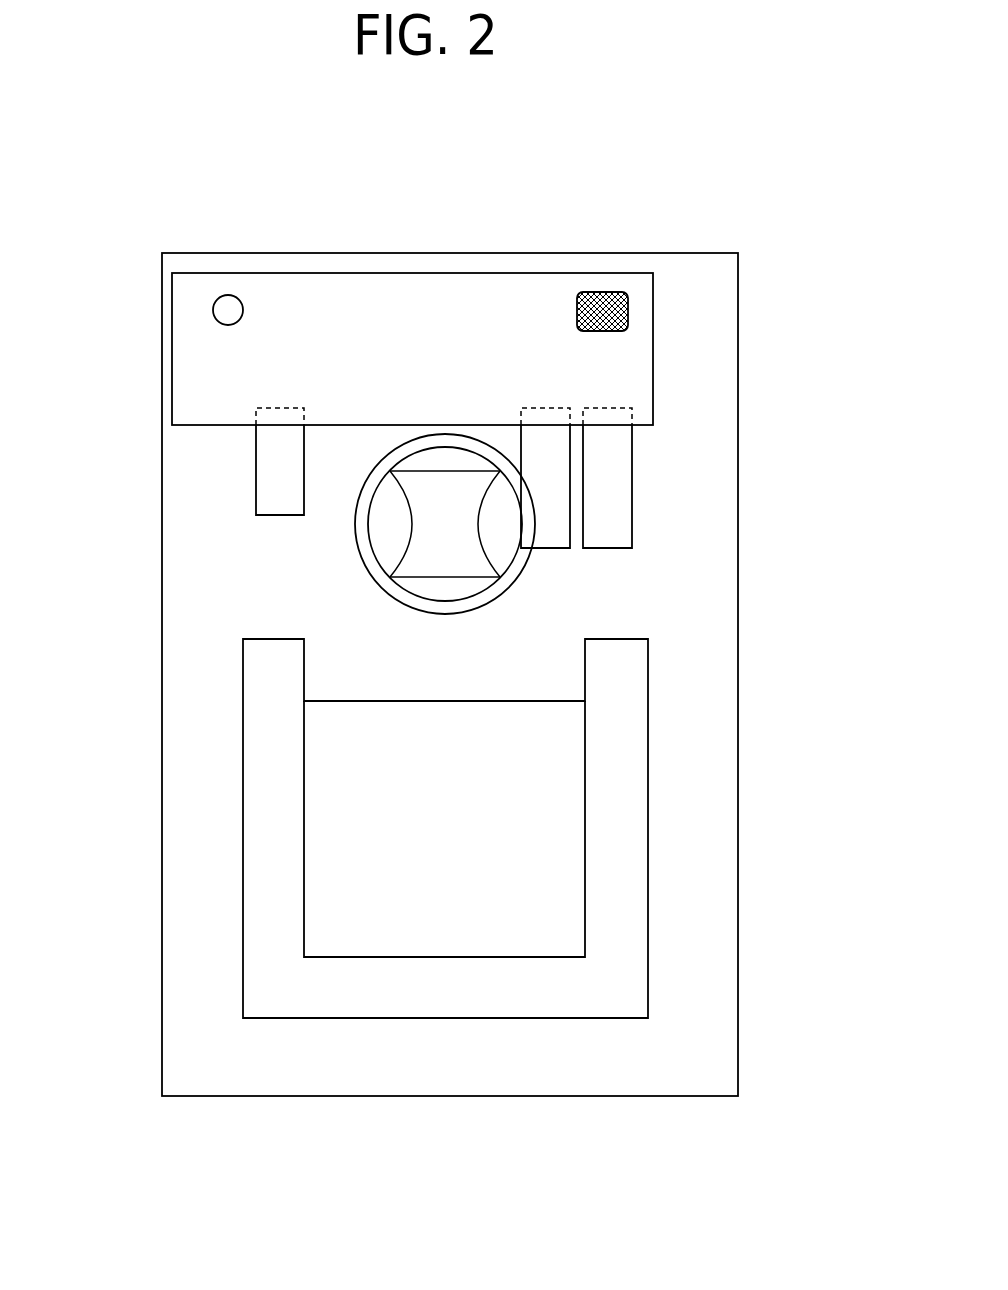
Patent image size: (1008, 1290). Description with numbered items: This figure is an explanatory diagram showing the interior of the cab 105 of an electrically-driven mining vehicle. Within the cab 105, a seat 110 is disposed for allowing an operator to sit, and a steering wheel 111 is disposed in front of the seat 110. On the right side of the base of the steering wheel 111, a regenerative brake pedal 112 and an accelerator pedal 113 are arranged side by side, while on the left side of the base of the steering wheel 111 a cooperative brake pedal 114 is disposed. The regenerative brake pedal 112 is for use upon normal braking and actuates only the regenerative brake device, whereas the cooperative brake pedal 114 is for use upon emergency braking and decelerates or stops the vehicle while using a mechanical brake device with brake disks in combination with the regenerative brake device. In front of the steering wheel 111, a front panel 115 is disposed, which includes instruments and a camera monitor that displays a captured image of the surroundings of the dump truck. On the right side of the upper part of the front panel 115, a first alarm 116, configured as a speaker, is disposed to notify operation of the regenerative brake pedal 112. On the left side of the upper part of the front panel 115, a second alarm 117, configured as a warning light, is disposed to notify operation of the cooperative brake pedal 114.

The cab 105 is at (748, 330).
The seat 110 is at (480, 990).
The steering wheel 111 is at (498, 597).
The regenerative brake pedal 112 is at (548, 527).
The accelerator pedal 113 is at (618, 518).
The cooperative brake pedal 114 is at (269, 493).
The front panel 115 is at (187, 427).
The first alarm 116 is at (628, 309).
The second alarm 117 is at (213, 318).